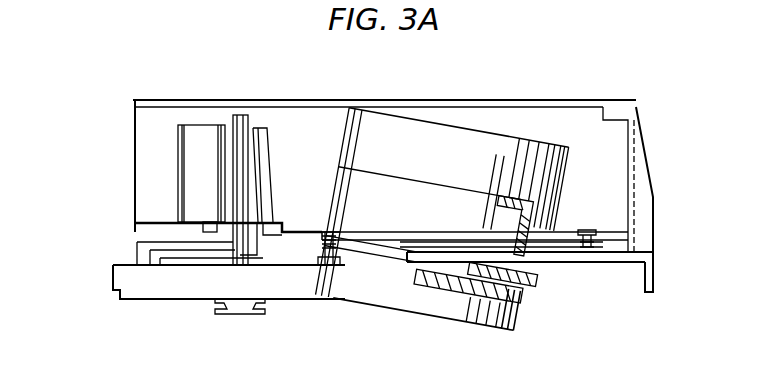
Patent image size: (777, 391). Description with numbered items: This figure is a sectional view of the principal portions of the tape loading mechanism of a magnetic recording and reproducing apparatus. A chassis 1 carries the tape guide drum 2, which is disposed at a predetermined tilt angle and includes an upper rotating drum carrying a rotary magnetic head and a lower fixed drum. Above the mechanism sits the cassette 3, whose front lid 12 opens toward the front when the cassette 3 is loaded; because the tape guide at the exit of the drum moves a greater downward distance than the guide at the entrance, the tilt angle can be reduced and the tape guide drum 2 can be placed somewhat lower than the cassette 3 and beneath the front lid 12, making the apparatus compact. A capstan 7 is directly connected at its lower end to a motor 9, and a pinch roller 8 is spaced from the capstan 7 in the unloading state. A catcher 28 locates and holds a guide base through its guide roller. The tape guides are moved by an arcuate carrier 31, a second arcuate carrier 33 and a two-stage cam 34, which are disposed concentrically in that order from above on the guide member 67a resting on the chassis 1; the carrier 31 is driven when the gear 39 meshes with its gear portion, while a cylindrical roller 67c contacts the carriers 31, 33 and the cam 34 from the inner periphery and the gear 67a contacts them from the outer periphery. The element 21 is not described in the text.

The chassis 1 is at (113, 283).
The tape guide drum 2 is at (390, 159).
The cassette 3 is at (134, 165).
The capstan 7 is at (242, 112).
The pinch roller 8 is at (178, 164).
The motor 9 is at (145, 299).
The front lid 12 is at (291, 102).
The lever 21 is at (268, 160).
The catcher 28 is at (560, 184).
The carrier 31 is at (364, 236).
The carrier 33 is at (318, 243).
The cam 34 is at (548, 262).
The gear 39 is at (587, 262).
The gear 67a is at (332, 268).
The roller 67c is at (478, 237).